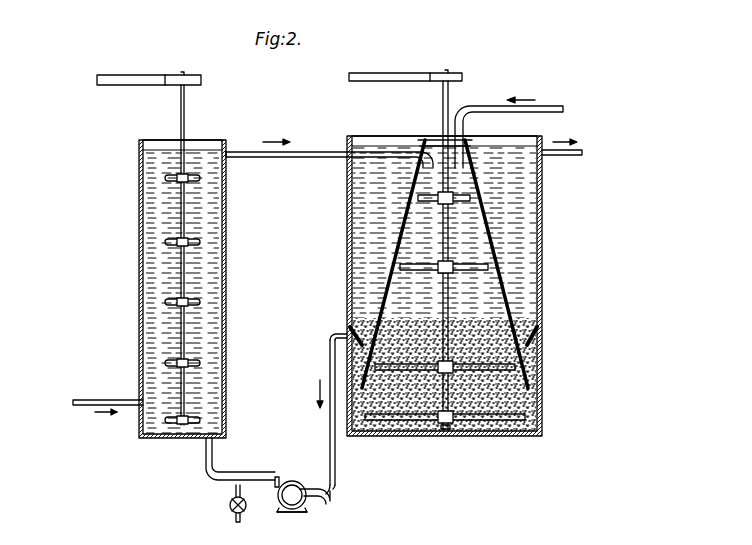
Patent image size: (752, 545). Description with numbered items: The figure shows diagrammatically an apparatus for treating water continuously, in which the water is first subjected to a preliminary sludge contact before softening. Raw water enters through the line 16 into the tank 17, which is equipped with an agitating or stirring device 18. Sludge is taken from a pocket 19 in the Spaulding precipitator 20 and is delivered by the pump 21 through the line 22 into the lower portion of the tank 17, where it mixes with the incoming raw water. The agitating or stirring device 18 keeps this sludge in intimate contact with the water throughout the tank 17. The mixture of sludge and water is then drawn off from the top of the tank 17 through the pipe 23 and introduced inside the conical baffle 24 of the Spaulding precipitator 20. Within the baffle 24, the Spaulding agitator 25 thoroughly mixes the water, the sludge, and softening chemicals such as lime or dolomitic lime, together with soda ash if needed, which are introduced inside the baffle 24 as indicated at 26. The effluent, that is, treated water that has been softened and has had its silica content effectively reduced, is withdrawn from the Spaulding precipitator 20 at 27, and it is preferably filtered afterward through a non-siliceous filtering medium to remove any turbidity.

The line 16 is at (86, 400).
The tank 17 is at (140, 262).
The agitating or stirring device 18 is at (149, 248).
The pocket 19 is at (347, 335).
The Spaulding precipitator 20 is at (540, 286).
The pump 21 is at (291, 490).
The line 22 is at (206, 462).
The pipe 23 is at (300, 152).
The conical baffle 24 is at (540, 232).
The Spaulding agitator 25 is at (443, 106).
The chemical introduction point 26 is at (462, 130).
The effluent withdrawal point 27 is at (576, 157).